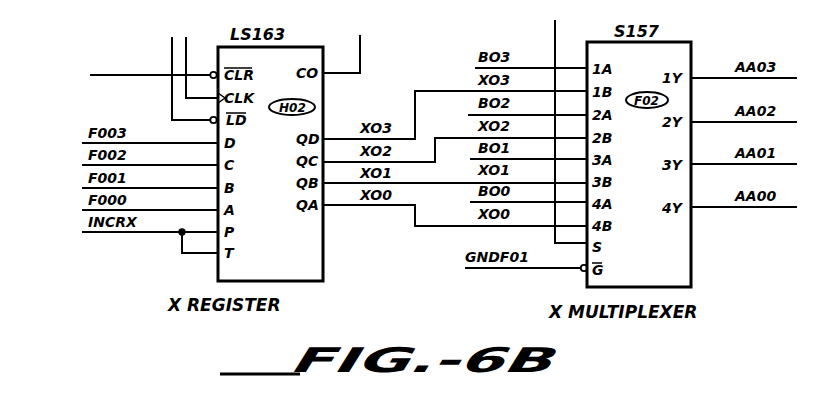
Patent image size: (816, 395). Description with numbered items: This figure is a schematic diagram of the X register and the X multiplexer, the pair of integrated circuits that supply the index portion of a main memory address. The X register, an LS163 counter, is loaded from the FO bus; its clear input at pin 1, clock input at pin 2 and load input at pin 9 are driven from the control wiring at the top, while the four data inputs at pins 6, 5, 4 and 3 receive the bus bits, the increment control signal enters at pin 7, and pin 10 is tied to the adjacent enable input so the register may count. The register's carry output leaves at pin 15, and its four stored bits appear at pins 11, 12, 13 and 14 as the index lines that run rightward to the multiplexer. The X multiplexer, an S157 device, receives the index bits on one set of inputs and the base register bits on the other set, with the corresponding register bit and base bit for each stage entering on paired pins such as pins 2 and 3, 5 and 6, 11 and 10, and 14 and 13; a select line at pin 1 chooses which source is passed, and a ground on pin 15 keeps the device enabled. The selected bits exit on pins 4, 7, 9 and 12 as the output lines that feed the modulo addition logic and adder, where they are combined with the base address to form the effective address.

The pin 1 is at (338, 132).
The pin 2 is at (386, 67).
The pin 3 is at (334, 142).
The pin 4 is at (439, 124).
The pin 5 is at (334, 131).
The pin 6 is at (334, 141).
The pin 7 is at (439, 168).
The pin 9 is at (484, 100).
The pin 10 is at (383, 209).
The pin 11 is at (456, 140).
The pin 12 is at (561, 175).
The pin 13 is at (455, 196).
The pin 14 is at (456, 194).
The pin 15 is at (455, 153).